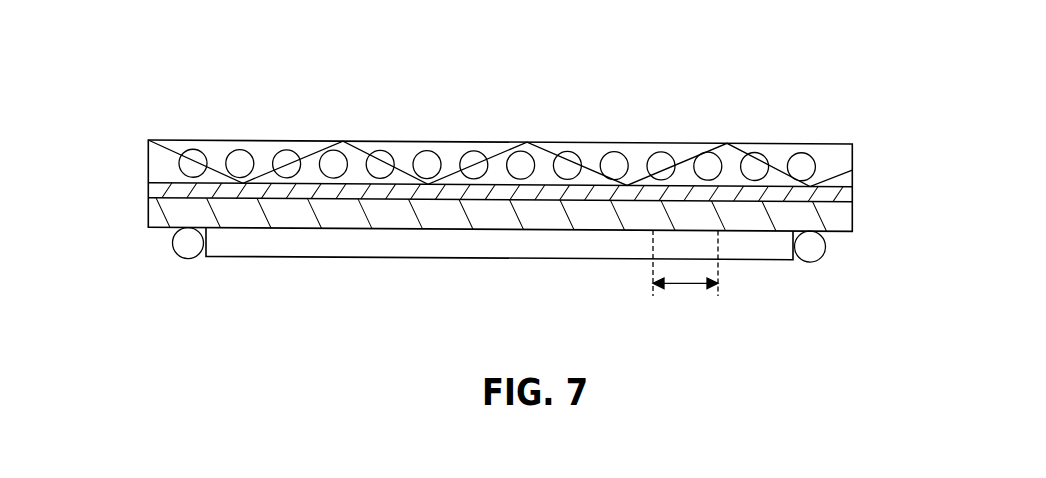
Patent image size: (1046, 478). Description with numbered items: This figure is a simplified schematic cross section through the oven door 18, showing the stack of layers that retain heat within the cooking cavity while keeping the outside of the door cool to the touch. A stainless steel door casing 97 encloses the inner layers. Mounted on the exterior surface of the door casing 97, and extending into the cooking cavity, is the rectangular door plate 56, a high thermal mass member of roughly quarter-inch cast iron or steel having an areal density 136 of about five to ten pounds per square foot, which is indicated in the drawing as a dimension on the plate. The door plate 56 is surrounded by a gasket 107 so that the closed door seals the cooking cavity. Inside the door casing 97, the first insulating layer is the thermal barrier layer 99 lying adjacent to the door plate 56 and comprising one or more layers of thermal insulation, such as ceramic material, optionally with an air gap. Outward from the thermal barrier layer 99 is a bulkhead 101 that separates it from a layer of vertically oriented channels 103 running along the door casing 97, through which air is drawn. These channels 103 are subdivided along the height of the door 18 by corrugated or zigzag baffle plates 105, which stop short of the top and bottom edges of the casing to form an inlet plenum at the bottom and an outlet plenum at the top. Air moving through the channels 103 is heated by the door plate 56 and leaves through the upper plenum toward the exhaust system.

The door 18 is at (105, 97).
The door casing 97 is at (143, 160).
The vertically oriented channels 103 is at (237, 160).
The baffle plates 105 is at (363, 148).
The bulkhead 101 is at (830, 195).
The thermal barrier layer 99 is at (830, 213).
The door plate 56 is at (330, 238).
The gasket 107 is at (187, 259).
The areal density 136 is at (683, 284).